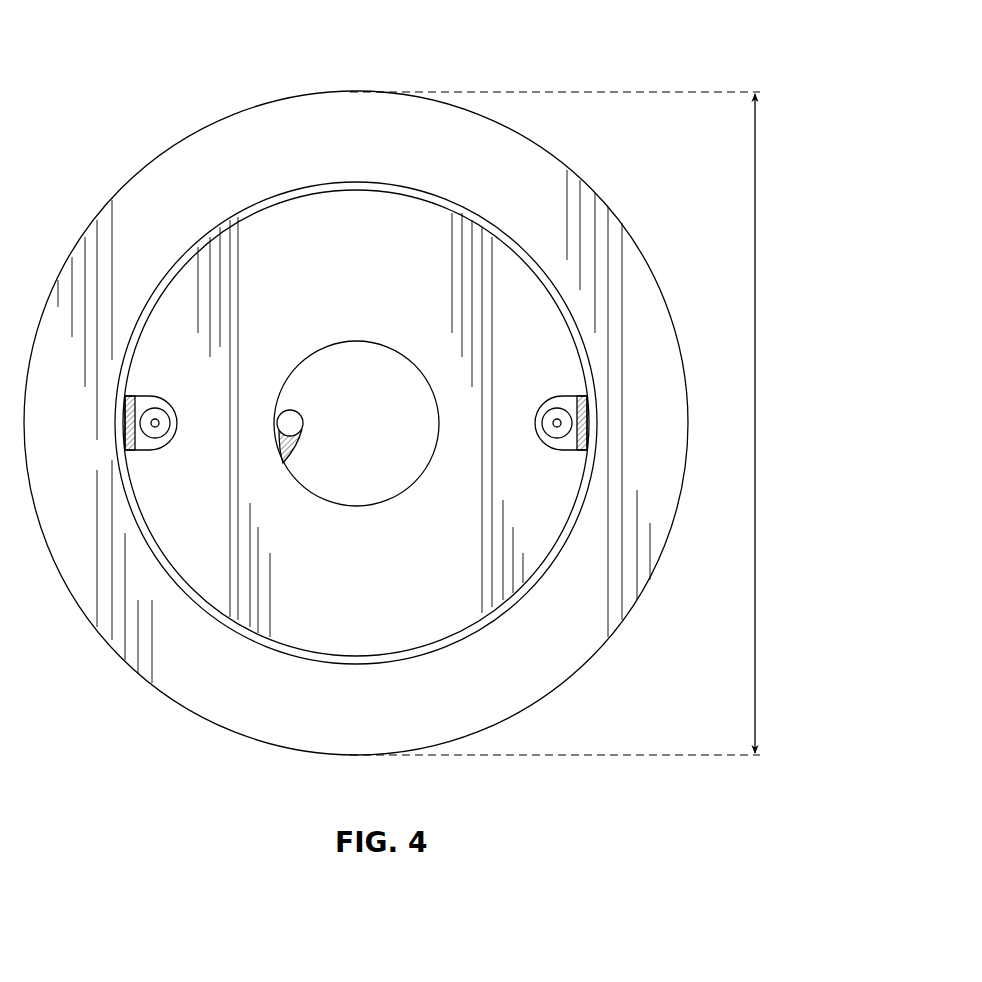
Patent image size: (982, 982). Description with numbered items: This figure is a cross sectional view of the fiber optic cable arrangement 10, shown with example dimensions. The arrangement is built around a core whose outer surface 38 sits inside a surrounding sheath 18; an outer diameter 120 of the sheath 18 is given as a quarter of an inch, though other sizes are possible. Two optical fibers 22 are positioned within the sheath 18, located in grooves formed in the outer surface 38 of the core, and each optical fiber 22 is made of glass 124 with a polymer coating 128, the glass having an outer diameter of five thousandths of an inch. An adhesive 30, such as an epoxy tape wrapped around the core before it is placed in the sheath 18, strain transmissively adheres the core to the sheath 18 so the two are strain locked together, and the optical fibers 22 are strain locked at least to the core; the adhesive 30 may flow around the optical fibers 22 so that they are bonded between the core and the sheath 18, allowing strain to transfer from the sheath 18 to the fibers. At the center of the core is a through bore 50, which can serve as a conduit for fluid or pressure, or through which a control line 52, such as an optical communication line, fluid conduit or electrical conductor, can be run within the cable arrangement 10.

The fiber optic cable arrangement 10 is at (446, 50).
The sheath 18 is at (616, 206).
The optical fiber 22 is at (342, 419).
The adhesive 30 is at (166, 269).
The outer surface 38 is at (166, 568).
The through bore 50 is at (357, 341).
The control line 52 is at (277, 421).
The outer diameter 120 is at (757, 425).
The glass 124 is at (151, 423).
The polymer coating 128 is at (140, 398).